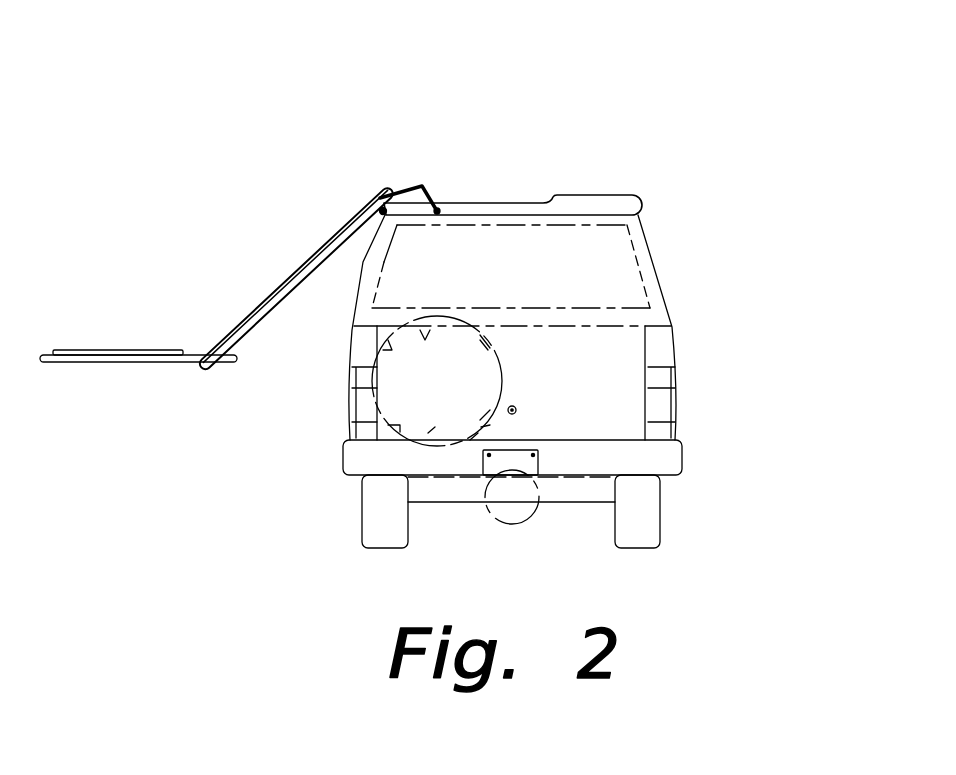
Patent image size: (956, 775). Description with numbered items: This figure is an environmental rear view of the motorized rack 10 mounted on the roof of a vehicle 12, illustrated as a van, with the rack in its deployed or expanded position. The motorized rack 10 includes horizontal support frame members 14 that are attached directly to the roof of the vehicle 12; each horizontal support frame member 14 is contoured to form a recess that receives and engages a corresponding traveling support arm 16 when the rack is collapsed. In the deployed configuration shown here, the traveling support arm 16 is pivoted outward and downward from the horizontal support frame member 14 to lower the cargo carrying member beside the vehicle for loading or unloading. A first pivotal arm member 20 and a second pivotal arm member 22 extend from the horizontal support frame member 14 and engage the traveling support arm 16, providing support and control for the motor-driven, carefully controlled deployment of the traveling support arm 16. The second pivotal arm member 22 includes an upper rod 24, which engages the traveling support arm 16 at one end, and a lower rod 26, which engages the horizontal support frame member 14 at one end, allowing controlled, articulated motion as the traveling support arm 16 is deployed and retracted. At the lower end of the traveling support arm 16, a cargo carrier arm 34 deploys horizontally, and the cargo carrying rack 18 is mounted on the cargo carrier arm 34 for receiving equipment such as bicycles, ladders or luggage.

The motorized rack 10 is at (727, 115).
The vehicle 12 is at (662, 350).
The horizontal support frame member 14 is at (642, 207).
The traveling support arm 16 is at (323, 245).
The cargo carrying rack 18 is at (108, 350).
The first pivotal arm member 20 is at (382, 213).
The second pivotal arm member 22 is at (421, 175).
The upper rod 24 is at (404, 188).
The lower rod 26 is at (430, 197).
The cargo carrier arm 34 is at (170, 363).